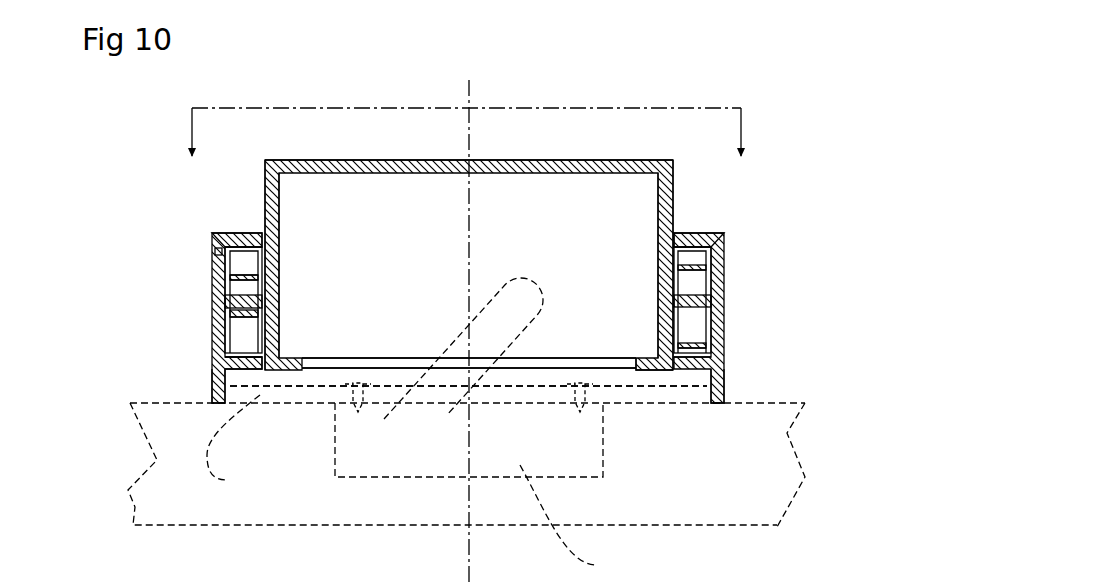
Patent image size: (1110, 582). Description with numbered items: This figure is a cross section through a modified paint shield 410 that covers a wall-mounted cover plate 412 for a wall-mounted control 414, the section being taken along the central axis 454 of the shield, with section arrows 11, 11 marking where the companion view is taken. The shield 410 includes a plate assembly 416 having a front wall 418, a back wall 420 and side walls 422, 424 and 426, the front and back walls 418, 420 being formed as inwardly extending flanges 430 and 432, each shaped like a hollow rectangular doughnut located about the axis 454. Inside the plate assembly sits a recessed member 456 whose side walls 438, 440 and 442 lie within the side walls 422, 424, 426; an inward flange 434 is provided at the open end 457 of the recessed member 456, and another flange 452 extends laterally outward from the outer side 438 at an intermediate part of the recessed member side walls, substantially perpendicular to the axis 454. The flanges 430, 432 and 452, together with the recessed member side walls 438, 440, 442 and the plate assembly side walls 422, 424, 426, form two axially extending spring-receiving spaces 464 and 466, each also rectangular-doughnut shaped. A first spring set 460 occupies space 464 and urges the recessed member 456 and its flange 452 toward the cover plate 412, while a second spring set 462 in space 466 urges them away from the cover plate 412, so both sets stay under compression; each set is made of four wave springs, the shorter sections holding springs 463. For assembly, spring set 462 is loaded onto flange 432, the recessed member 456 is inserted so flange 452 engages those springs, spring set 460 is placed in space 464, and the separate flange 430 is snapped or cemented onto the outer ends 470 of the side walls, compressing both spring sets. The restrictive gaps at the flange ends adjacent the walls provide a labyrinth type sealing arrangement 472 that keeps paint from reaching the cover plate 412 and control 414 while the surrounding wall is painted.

The section arrows 11- 11 is at (467, 132).
The paint shield 410 is at (413, 158).
The cover plate 412 is at (466, 456).
The wall-mounted control 414 is at (582, 522).
The plate assembly 416 is at (211, 238).
The front wall 418 is at (702, 233).
The back wall 420 is at (701, 404).
The side wall 422 is at (230, 302).
The side wall 424 is at (668, 382).
The side wall 426 is at (711, 283).
The inwardly extending flange 430 is at (243, 233).
The inwardly extending flange 432 is at (222, 366).
The flange 434 is at (640, 362).
The outer side wall 438 is at (673, 177).
The side wall 440 is at (281, 263).
The side wall 442 is at (375, 195).
The flange 452 is at (230, 315).
The axis 454 is at (475, 92).
The recessed member 456 is at (575, 158).
The open end 457 is at (622, 361).
The spring set 460 is at (262, 283).
The spring set 462 is at (272, 359).
The wave spring 463 is at (259, 276).
The spring-receiving space 464 is at (711, 267).
The spring-receiving space 466 is at (228, 358).
The outer ends of side walls 470 is at (218, 258).
The labyrinth type sealing arrangement 472 is at (233, 277).